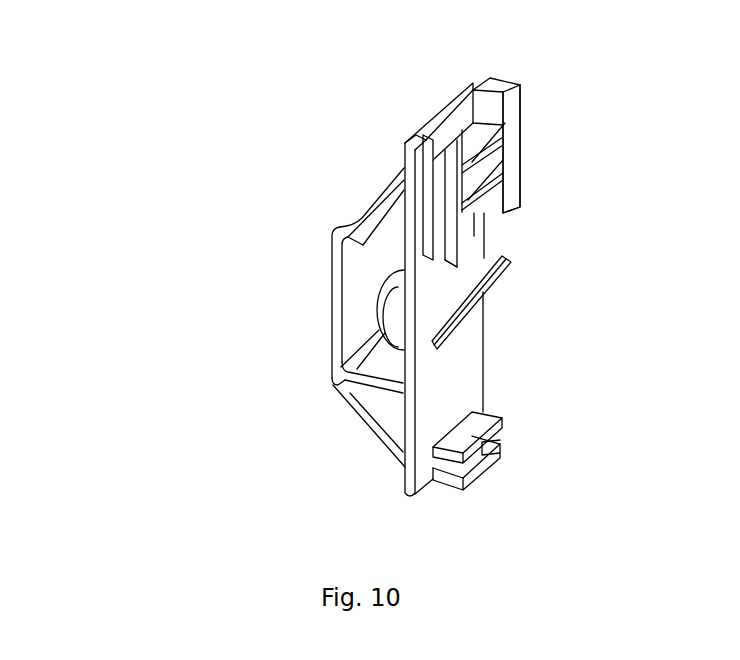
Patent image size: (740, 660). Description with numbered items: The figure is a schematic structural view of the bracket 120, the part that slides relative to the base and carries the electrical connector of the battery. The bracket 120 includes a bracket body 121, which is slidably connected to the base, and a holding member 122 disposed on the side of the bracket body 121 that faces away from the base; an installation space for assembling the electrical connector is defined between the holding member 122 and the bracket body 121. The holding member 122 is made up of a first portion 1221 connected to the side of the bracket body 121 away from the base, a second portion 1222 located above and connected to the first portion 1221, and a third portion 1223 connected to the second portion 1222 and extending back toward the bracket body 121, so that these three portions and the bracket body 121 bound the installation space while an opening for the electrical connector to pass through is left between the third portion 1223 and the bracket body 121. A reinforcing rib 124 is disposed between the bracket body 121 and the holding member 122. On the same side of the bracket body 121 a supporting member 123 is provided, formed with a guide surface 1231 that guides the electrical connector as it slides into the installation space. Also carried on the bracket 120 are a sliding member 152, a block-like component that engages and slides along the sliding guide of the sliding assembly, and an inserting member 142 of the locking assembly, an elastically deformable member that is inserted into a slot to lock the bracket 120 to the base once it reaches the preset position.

The bracket 120 is at (312, 93).
The bracket body 121 is at (434, 107).
The holding member 122 is at (223, 295).
The first portion 1221 is at (287, 363).
The second portion 1222 is at (330, 296).
The third portion 1223 is at (365, 203).
The supporting member 123 is at (531, 426).
The guide surface 1231 is at (514, 473).
The reinforcing rib 124 is at (368, 432).
The inserting member 142 is at (497, 276).
The sliding member 152 is at (514, 143).